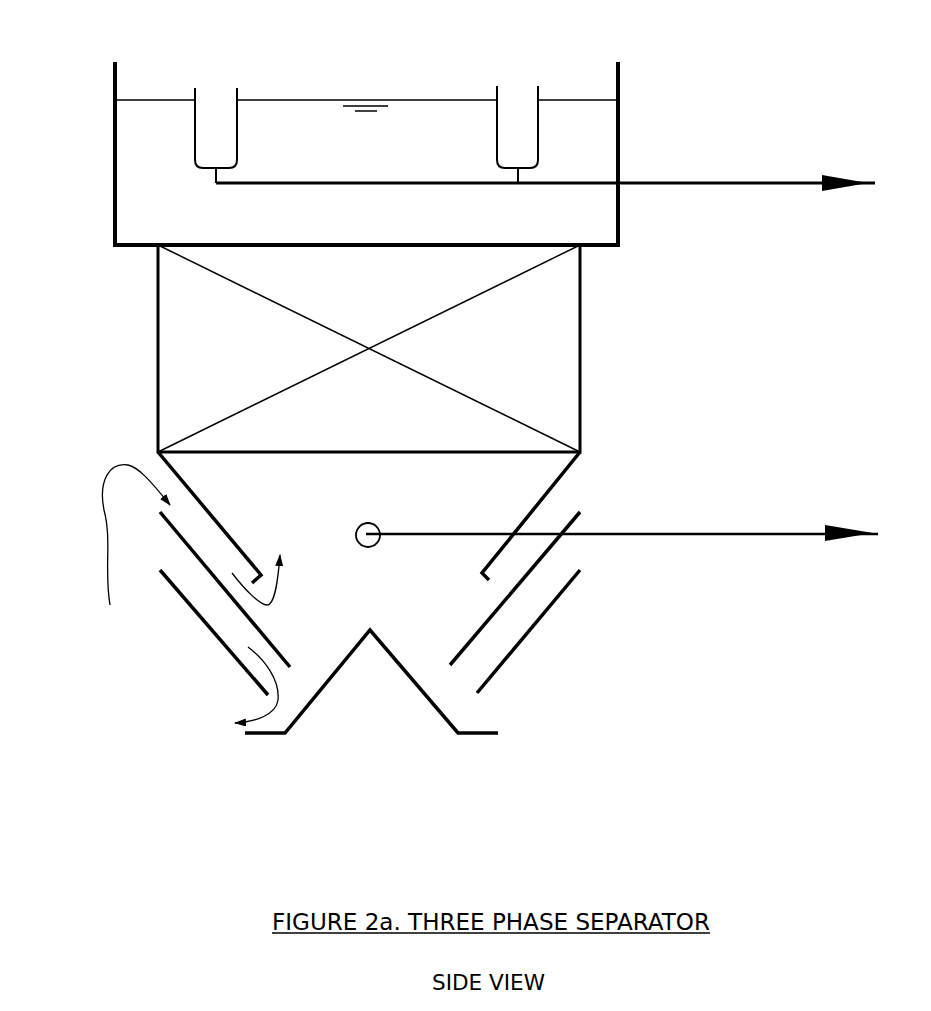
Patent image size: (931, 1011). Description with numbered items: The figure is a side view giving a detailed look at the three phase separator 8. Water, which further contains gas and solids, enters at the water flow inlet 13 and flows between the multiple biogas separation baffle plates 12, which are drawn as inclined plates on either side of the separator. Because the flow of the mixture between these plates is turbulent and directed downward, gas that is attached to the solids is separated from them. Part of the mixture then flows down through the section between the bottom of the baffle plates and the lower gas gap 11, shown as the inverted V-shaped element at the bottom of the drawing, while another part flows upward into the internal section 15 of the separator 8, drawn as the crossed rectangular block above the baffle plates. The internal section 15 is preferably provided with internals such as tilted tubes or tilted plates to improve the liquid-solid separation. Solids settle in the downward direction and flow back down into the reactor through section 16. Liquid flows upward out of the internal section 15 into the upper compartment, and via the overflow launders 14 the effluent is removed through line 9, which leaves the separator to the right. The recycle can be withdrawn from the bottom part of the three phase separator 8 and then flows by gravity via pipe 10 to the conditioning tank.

The three phase separator 8 is at (112, 163).
The line 9 is at (685, 178).
The pipe 10 is at (688, 530).
The lower gas gap 11 is at (482, 738).
The biogas separation baffle plates 12 is at (530, 578).
The water flow inlet 13 is at (198, 573).
The overflow launders 14 is at (500, 82).
The internal section 15 is at (533, 347).
The section 16 is at (320, 643).